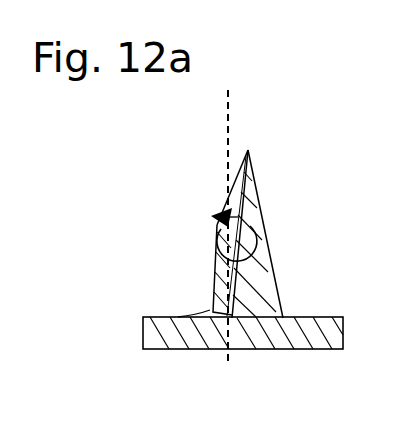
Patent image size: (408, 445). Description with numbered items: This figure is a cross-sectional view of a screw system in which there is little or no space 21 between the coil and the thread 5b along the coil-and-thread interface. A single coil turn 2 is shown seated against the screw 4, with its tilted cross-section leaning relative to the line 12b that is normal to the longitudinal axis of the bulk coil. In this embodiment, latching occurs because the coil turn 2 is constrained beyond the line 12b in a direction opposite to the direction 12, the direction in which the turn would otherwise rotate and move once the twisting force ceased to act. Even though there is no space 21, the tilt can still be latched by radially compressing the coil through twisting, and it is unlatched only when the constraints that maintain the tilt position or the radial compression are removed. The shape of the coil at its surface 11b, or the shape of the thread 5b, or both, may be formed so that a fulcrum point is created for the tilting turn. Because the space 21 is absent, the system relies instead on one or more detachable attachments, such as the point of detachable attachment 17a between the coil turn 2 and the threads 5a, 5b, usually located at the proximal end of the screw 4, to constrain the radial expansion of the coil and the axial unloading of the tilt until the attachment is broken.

The coil turn 2 is at (203, 268).
The screw 4 is at (140, 326).
The thread 5a is at (192, 305).
The thread 5b is at (280, 266).
The coil surface 11b is at (252, 275).
The direction of rotation 12 is at (260, 220).
The normal line 12b is at (247, 127).
The point of detachable attachment 17a is at (229, 171).
The space 21 is at (246, 327).